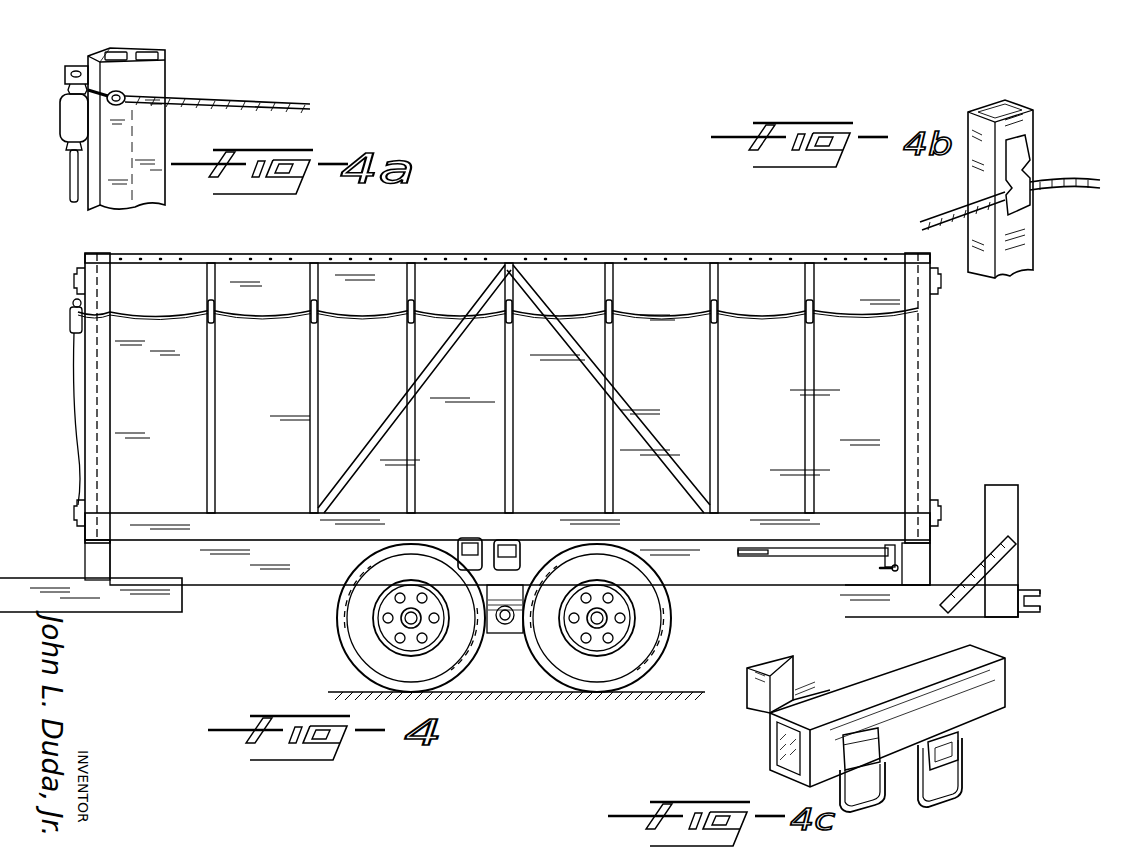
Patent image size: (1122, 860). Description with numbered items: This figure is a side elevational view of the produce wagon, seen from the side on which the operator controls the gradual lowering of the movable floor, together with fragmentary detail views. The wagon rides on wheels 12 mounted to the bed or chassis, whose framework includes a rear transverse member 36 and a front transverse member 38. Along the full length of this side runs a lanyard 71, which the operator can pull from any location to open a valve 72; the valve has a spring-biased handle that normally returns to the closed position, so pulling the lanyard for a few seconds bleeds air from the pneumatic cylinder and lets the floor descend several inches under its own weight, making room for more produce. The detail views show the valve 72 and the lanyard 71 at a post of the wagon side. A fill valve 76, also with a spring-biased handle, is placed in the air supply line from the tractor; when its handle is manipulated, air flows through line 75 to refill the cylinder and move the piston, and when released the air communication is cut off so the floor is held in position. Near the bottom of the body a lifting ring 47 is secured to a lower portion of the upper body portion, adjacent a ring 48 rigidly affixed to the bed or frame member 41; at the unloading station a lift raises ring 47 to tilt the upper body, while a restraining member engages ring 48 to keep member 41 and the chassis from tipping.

In FIG. 4, the wheels 12 is at (662, 624).
In FIG. 4, the rear transverse member 36 is at (930, 568).
In FIG. 4, the front transverse member 38 is at (86, 560).
In FIG. 4C, the bed or frame member 41 is at (815, 673).
In FIG. 4, the lifting ring 47 is at (448, 536).
In FIG. 4C, the lifting ring 47 is at (840, 812).
In FIG. 4, the ring 48 is at (533, 562).
In FIG. 4C, the ring 48 is at (965, 782).
In FIG. 4, the lanyard 71 is at (668, 315).
In FIG. 4A, the lanyard 71 is at (268, 100).
In FIG. 4B, the lanyard 71 is at (1078, 188).
In FIG. 4, the valve 72 is at (66, 318).
In FIG. 4A, the valve 72 is at (64, 120).
In FIG. 4, the line 75 is at (823, 555).
In FIG. 4, the fill valve 76 is at (880, 569).